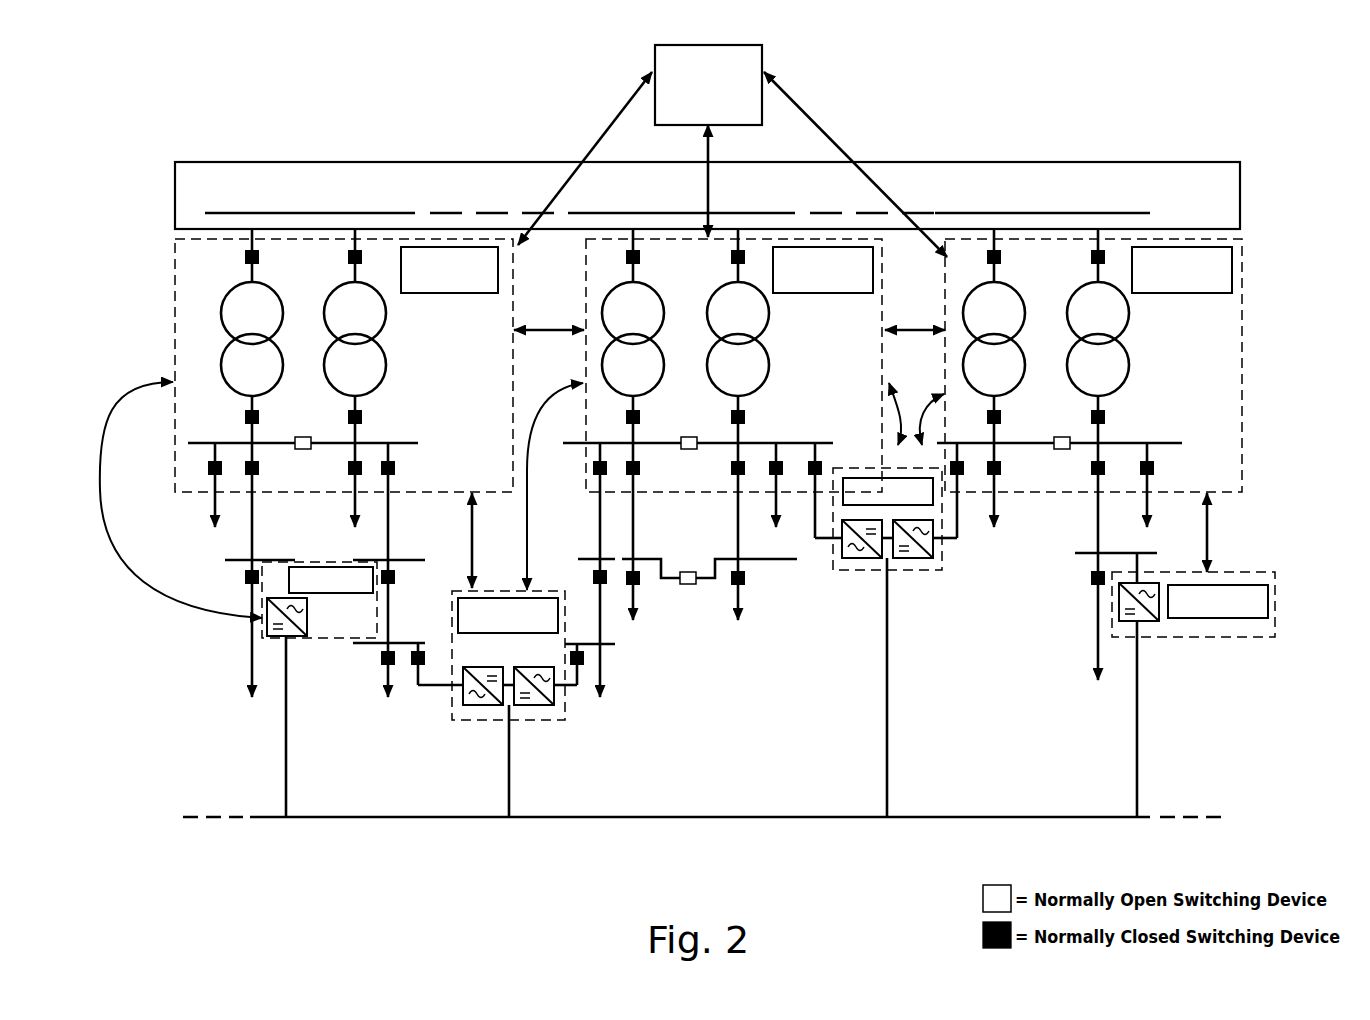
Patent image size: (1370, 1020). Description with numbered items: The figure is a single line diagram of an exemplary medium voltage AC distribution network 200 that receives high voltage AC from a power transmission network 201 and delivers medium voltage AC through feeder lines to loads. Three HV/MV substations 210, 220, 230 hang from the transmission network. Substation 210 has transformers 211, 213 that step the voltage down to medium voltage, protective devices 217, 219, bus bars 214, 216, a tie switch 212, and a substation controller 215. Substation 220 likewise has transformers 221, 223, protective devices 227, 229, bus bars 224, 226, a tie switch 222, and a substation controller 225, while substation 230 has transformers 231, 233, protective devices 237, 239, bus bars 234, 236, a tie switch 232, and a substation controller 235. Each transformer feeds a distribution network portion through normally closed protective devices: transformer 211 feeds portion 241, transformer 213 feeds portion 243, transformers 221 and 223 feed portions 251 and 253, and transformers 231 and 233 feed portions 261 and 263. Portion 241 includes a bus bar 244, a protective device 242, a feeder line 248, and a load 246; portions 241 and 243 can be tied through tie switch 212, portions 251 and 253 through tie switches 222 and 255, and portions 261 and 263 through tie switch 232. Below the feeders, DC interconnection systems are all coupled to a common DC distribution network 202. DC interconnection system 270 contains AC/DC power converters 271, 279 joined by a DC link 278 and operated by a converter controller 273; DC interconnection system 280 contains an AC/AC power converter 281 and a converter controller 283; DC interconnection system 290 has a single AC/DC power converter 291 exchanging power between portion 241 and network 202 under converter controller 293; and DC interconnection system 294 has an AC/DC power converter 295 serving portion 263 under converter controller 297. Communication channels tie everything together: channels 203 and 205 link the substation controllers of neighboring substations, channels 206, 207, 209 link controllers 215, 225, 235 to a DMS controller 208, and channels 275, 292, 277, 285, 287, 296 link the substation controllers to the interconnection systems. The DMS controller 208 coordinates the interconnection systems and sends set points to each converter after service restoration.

The MVAC distribution network 200 is at (1234, 131).
The power transmission network 201 is at (215, 160).
The DC distribution network 202 is at (688, 820).
The communication channel 203 is at (548, 326).
The communication channel 205 is at (918, 326).
The communication channel 206 is at (610, 119).
The communication channel 207 is at (706, 145).
The DMS controller 208 is at (763, 50).
The communication channel 209 is at (813, 121).
The HV/MV substation 210 is at (175, 262).
The transformer 211 is at (224, 340).
The tie switch 212 is at (303, 450).
The transformer 213 is at (386, 389).
The bus bar 214 is at (188, 443).
The substation controller 215 is at (452, 294).
The bus bar 216 is at (418, 443).
The protective device 217 is at (245, 417).
The protective device 219 is at (348, 417).
The HV/MV substation 220 is at (586, 262).
The transformer 221 is at (660, 342).
The tie switch 222 is at (689, 450).
The transformer 223 is at (770, 350).
The bus bar 224 is at (566, 441).
The substation controller 225 is at (822, 293).
The bus bar 226 is at (832, 441).
The protective device 227 is at (640, 417).
The protective device 229 is at (745, 417).
The HV/MV substation 230 is at (1242, 262).
The transformer 231 is at (1018, 342).
The tie switch 232 is at (1062, 450).
The transformer 233 is at (1130, 350).
The bus bar 234 is at (972, 441).
The substation controller 235 is at (1183, 293).
The bus bar 236 is at (1182, 442).
The protective device 237 is at (1001, 417).
The protective device 239 is at (1105, 417).
The distribution network portion 241 is at (248, 663).
The protective device 242 is at (245, 579).
The distribution network portion 243 is at (392, 619).
The bus bar 244 is at (225, 559).
The load 246 is at (210, 525).
The feeder line 248 is at (254, 512).
The distribution network portion 251 is at (638, 600).
The distribution network portion 253 is at (743, 600).
The tie switch 255 is at (688, 570).
The distribution network portion 261 is at (1003, 509).
The distribution network portion 263 is at (1092, 548).
The DC interconnection system 270 is at (488, 590).
The AC/DC power converter 271 is at (540, 707).
The converter controller 273 is at (538, 597).
The communication channel 275 is at (472, 528).
The communication channel 277 is at (541, 402).
The DC link 278 is at (508, 669).
The AC/DC power converter 279 is at (470, 707).
The DC interconnection system 280 is at (850, 572).
The AC/AC power converter 281 is at (915, 559).
The converter controller 283 is at (857, 477).
The communication channel 285 is at (898, 381).
The communication channel 287 is at (919, 404).
The DC interconnection system 290 is at (322, 640).
The AC/DC power converter 291 is at (306, 618).
The communication channel 292 is at (178, 505).
The converter controller 293 is at (330, 562).
The DC interconnection system 294 is at (1250, 640).
The AC/DC power converter 295 is at (1157, 619).
The communication channel 296 is at (1209, 521).
The converter controller 297 is at (1242, 584).